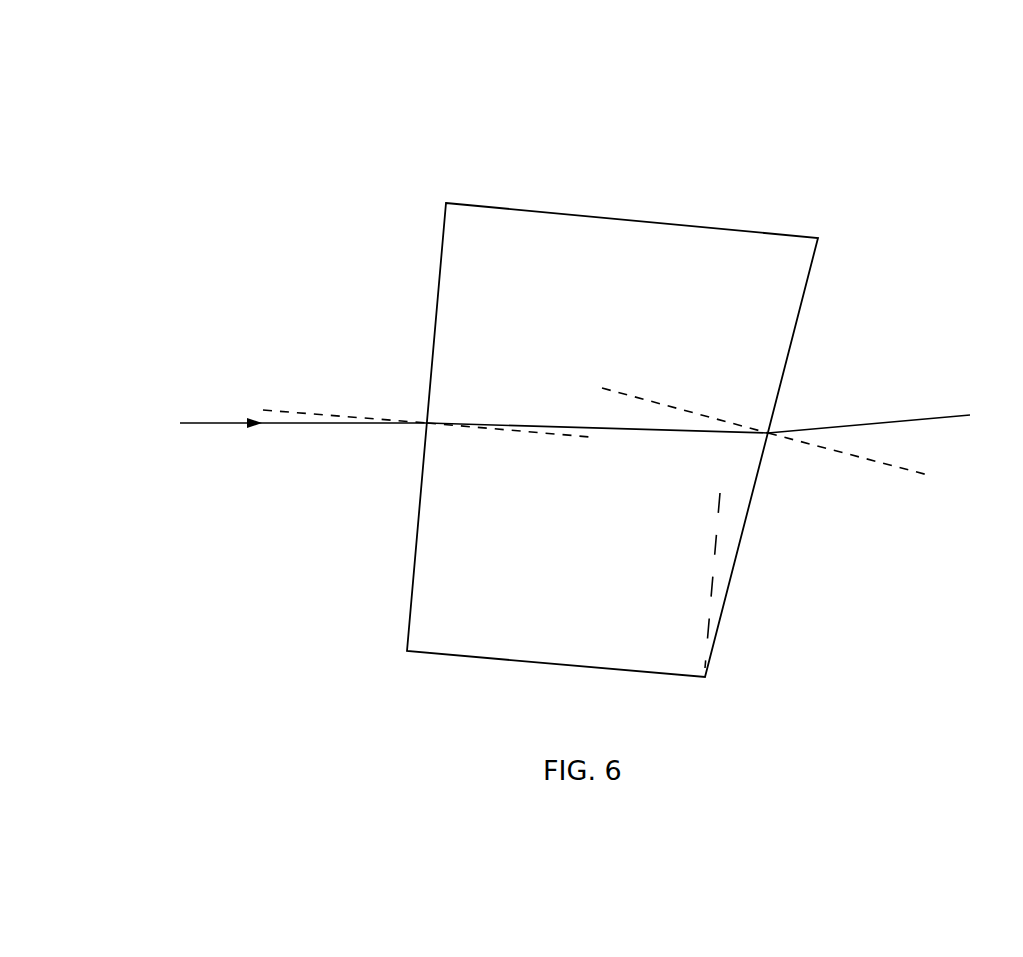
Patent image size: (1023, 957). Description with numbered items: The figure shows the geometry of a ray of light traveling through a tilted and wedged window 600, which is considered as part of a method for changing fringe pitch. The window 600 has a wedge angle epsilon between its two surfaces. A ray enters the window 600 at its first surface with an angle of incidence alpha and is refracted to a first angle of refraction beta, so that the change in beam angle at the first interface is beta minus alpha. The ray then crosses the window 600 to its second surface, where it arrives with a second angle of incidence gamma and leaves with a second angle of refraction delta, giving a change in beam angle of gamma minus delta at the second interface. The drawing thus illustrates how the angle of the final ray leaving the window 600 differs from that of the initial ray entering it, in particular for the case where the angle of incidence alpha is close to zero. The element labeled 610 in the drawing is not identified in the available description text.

The wedged window 600 is at (363, 120).
The prism 610 is at (513, 207).